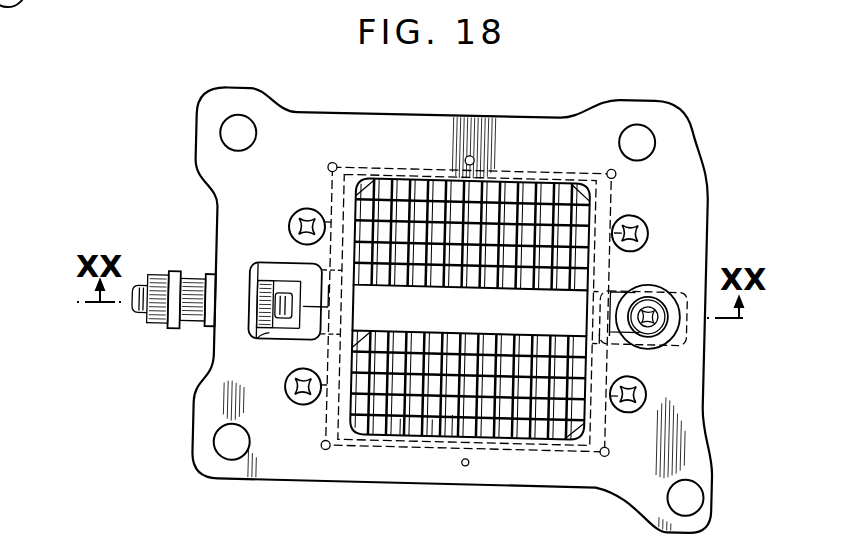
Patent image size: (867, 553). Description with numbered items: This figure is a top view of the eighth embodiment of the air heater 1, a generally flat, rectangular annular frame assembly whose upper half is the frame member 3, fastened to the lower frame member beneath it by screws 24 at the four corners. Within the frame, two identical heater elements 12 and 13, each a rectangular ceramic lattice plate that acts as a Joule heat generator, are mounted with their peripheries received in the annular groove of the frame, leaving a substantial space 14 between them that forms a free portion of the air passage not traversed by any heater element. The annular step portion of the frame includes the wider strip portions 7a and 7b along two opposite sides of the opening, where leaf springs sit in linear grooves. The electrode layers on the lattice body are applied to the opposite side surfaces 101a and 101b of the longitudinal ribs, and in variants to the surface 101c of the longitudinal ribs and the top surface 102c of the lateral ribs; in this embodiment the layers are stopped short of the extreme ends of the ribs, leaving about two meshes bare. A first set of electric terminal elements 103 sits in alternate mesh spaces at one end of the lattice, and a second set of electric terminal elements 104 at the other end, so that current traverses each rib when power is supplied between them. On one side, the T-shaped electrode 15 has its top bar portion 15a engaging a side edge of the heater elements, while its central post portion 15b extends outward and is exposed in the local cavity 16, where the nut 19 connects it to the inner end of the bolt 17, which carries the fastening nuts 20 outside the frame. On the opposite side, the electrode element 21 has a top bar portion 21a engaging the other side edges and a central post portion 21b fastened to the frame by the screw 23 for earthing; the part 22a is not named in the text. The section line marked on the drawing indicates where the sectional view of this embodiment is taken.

The air heater 1 is at (538, 130).
The second frame member 3 is at (707, 203).
The wider strip portion 7a is at (343, 449).
The wider strip portion 7b is at (606, 458).
The heater element 12 is at (519, 438).
The heater element 13 is at (440, 186).
The space 14 is at (494, 322).
The electrode 15 is at (298, 288).
The top bar portion 15a is at (334, 428).
The central post portion 15b is at (300, 323).
The local cavity 16 is at (262, 341).
The bolt 17 is at (141, 316).
The nut 19 is at (262, 292).
The fastening nuts 20 is at (192, 328).
The electrode element 21 is at (623, 297).
The top bar portion 21a is at (606, 426).
The central post portion 21b is at (624, 340).
The washer 22a is at (656, 291).
The screw 23 is at (661, 340).
The screws 24 is at (309, 209).
The side surface of longitudinal rib 101a is at (432, 437).
The side surface of longitudinal rib 101b is at (452, 420).
The surface of longitudinal rib 101c is at (410, 437).
The top surface of lateral rib 102c is at (497, 425).
The first set of electric terminal elements 103 is at (366, 184).
The second set of electric terminal elements 104 is at (566, 190).